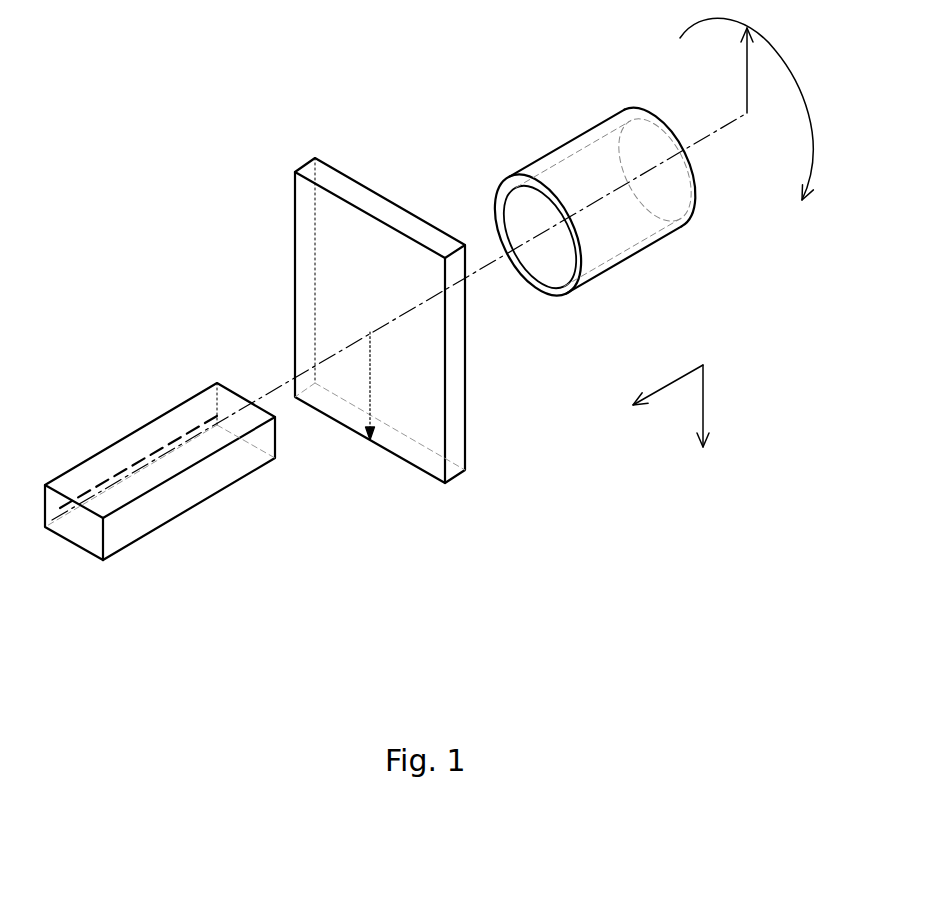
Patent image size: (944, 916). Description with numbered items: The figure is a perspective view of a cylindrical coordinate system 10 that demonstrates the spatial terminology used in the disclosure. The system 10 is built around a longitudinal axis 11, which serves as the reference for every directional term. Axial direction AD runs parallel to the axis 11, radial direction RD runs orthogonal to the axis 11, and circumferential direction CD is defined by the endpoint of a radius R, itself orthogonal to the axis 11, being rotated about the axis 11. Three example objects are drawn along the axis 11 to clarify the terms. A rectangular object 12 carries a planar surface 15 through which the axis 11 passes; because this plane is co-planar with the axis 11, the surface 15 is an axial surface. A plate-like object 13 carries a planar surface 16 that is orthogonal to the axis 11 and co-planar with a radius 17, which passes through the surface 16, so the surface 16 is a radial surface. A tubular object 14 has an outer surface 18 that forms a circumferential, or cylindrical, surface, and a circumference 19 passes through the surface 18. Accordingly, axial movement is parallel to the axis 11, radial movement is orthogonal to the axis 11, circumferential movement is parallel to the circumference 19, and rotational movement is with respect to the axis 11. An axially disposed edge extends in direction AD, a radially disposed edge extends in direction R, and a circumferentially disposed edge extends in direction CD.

The cylindrical coordinate system 10 is at (252, 205).
The longitudinal axis 11 is at (695, 140).
The object 12 is at (128, 550).
The object 13 is at (380, 342).
The object 14 is at (557, 209).
The axial surface 15 is at (125, 453).
The radial surface 16 is at (308, 282).
The radius 17 is at (372, 378).
The circumferential surface 18 is at (563, 143).
The circumference 19 is at (492, 202).
The radius R is at (745, 68).
The circumferential direction CD is at (793, 77).
The axial direction AD is at (668, 380).
The radial direction RD is at (703, 398).